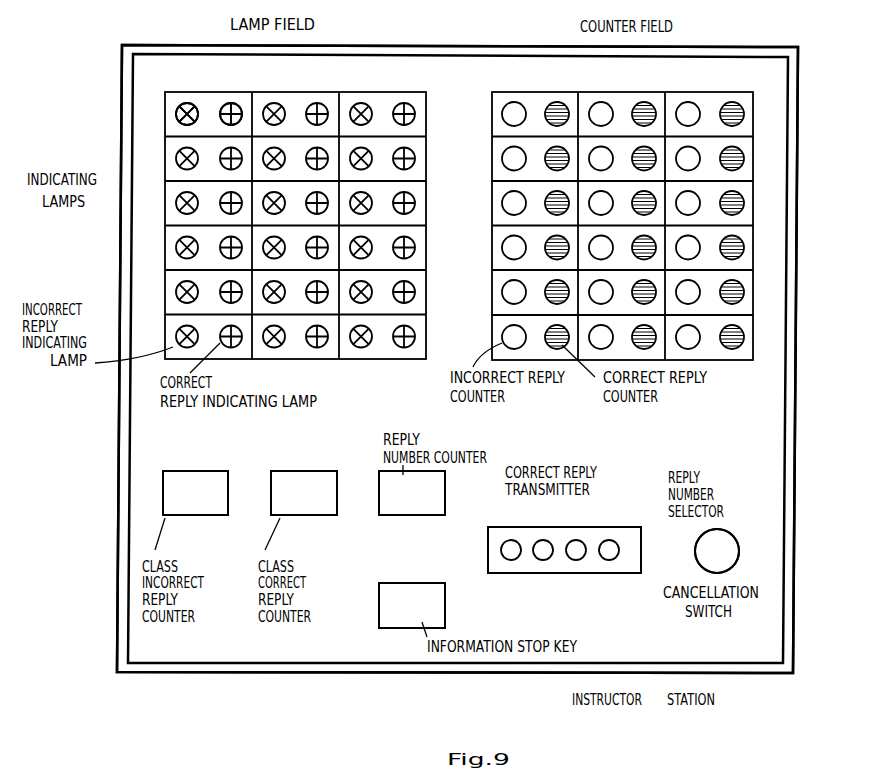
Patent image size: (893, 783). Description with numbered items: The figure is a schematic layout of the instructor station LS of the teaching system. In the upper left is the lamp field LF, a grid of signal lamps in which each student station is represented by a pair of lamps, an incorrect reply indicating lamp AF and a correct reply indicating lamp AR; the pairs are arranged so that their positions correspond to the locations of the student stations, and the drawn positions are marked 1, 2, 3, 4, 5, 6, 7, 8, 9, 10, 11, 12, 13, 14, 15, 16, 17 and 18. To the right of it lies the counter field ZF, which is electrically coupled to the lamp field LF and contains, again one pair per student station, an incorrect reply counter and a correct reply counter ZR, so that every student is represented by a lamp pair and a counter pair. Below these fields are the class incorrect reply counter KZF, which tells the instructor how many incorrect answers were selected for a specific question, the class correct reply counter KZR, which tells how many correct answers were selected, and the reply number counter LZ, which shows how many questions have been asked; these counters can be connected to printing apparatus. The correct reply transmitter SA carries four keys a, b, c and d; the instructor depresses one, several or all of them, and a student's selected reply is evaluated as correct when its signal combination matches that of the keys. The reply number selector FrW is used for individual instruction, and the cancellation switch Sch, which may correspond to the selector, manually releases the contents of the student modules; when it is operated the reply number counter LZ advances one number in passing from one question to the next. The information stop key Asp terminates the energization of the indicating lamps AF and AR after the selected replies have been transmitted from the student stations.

The lamp field LF is at (380, 97).
The counter field ZF is at (716, 100).
The correct reply counter ZR is at (559, 105).
The incorrect reply indicating lamp AF is at (181, 103).
The correct reply indicating lamp AR is at (227, 104).
The indicating lamp row 1 is at (171, 119).
The indicating lamp row 2 is at (171, 164).
The indicating lamp row 3 is at (171, 208).
The indicating lamp row 4 is at (171, 252).
The indicating lamp row 5 is at (171, 297).
The indicating lamp row 6 is at (171, 342).
The indicating lamp pair 7 is at (264, 100).
The indicating lamp pair 8 is at (293, 145).
The indicating lamp pair 9 is at (298, 188).
The indicating lamp pair 10 is at (262, 260).
The indicating lamp pair 11 is at (296, 305).
The indicating lamp pair 12 is at (322, 355).
The indicating lamp pair 13 is at (421, 119).
The indicating lamp pair 14 is at (421, 164).
The indicating lamp pair 15 is at (421, 208).
The indicating lamp pair 16 is at (421, 252).
The indicating lamp pair 17 is at (421, 297).
The indicating lamp pair 18 is at (421, 342).
The class incorrect reply counter KZF is at (168, 507).
The class correct reply counter KZR is at (278, 508).
The reply number counter LZ is at (393, 510).
The information stop key Asp is at (387, 627).
The correct reply transmitter SA is at (564, 554).
The key a is at (511, 540).
The key b is at (543, 540).
The key c is at (576, 540).
The key d is at (609, 540).
The reply number selector FrW is at (736, 546).
The cancellation switch Sch is at (732, 555).
The instructor station LS is at (723, 675).